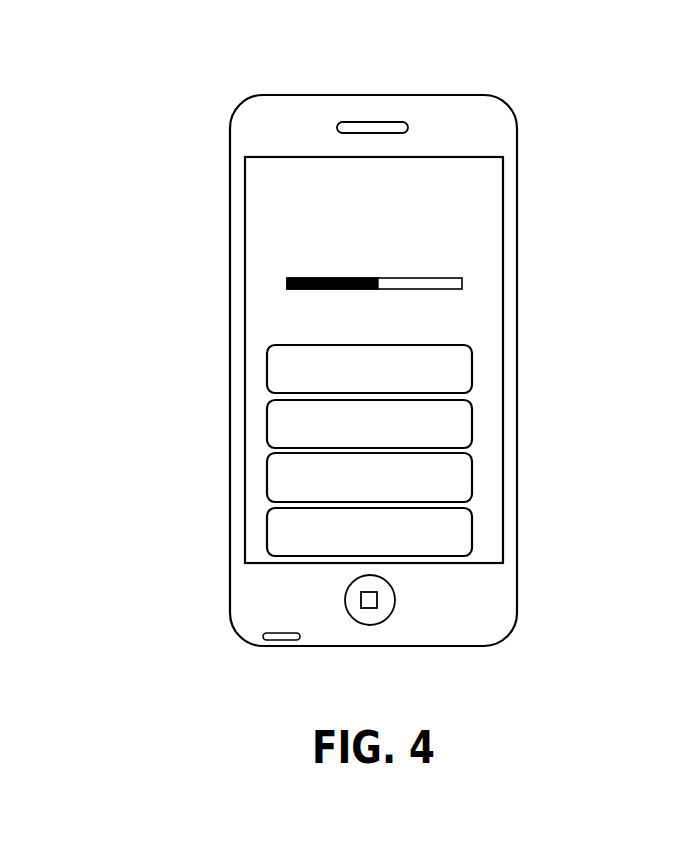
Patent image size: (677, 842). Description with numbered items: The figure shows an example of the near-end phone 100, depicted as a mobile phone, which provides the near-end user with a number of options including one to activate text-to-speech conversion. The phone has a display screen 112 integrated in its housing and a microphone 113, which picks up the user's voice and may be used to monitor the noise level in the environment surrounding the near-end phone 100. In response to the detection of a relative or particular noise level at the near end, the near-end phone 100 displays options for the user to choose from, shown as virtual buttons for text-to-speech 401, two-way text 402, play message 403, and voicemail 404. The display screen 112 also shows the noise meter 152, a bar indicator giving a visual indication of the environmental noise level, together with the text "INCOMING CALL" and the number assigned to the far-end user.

The near-end phone 100 is at (461, 98).
The display screen 112 is at (487, 200).
The noise meter 152 is at (462, 289).
The text-to-speech option 401 is at (465, 368).
The two-way text option 402 is at (465, 423).
The play message option 403 is at (465, 476).
The voicemail option 404 is at (465, 531).
The microphone 113 is at (263, 640).